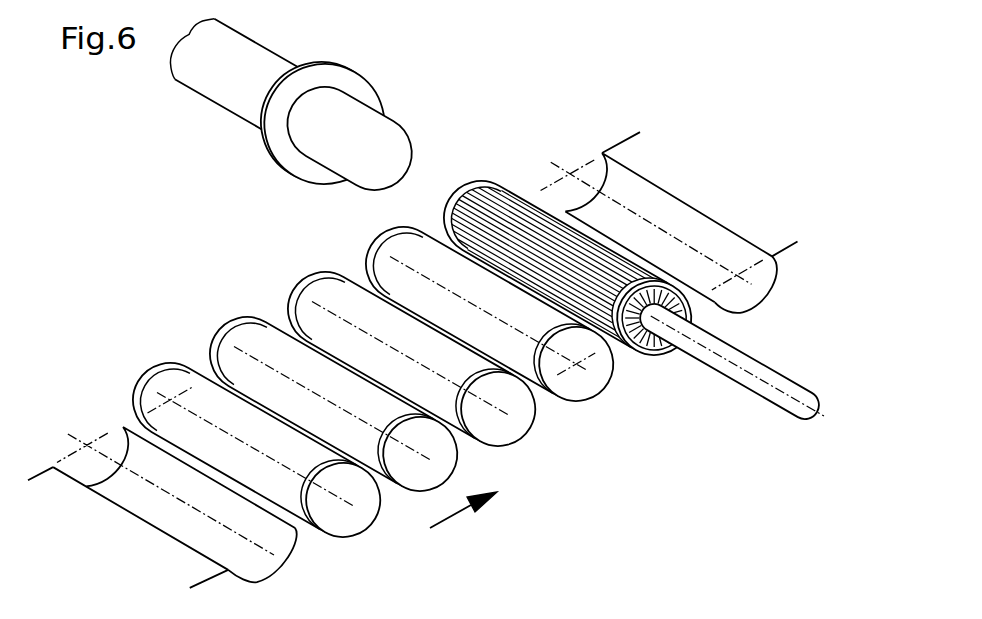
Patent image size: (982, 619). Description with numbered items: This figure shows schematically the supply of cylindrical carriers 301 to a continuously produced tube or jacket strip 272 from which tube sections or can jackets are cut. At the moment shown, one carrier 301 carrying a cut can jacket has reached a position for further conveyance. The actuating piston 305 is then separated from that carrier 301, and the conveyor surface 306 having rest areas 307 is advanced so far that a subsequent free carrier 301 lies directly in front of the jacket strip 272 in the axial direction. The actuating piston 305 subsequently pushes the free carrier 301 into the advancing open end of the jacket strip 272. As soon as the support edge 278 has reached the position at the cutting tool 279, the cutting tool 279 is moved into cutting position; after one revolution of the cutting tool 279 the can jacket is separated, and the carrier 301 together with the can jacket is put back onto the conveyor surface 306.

The jacket strip 272 is at (224, 111).
The cutting tool 279 is at (360, 86).
The support edge 278 is at (406, 226).
The cylindrical carrier 301 is at (367, 250).
The actuating piston 305 is at (758, 355).
The conveyor surface 306 is at (617, 144).
The rest area 307 is at (781, 279).